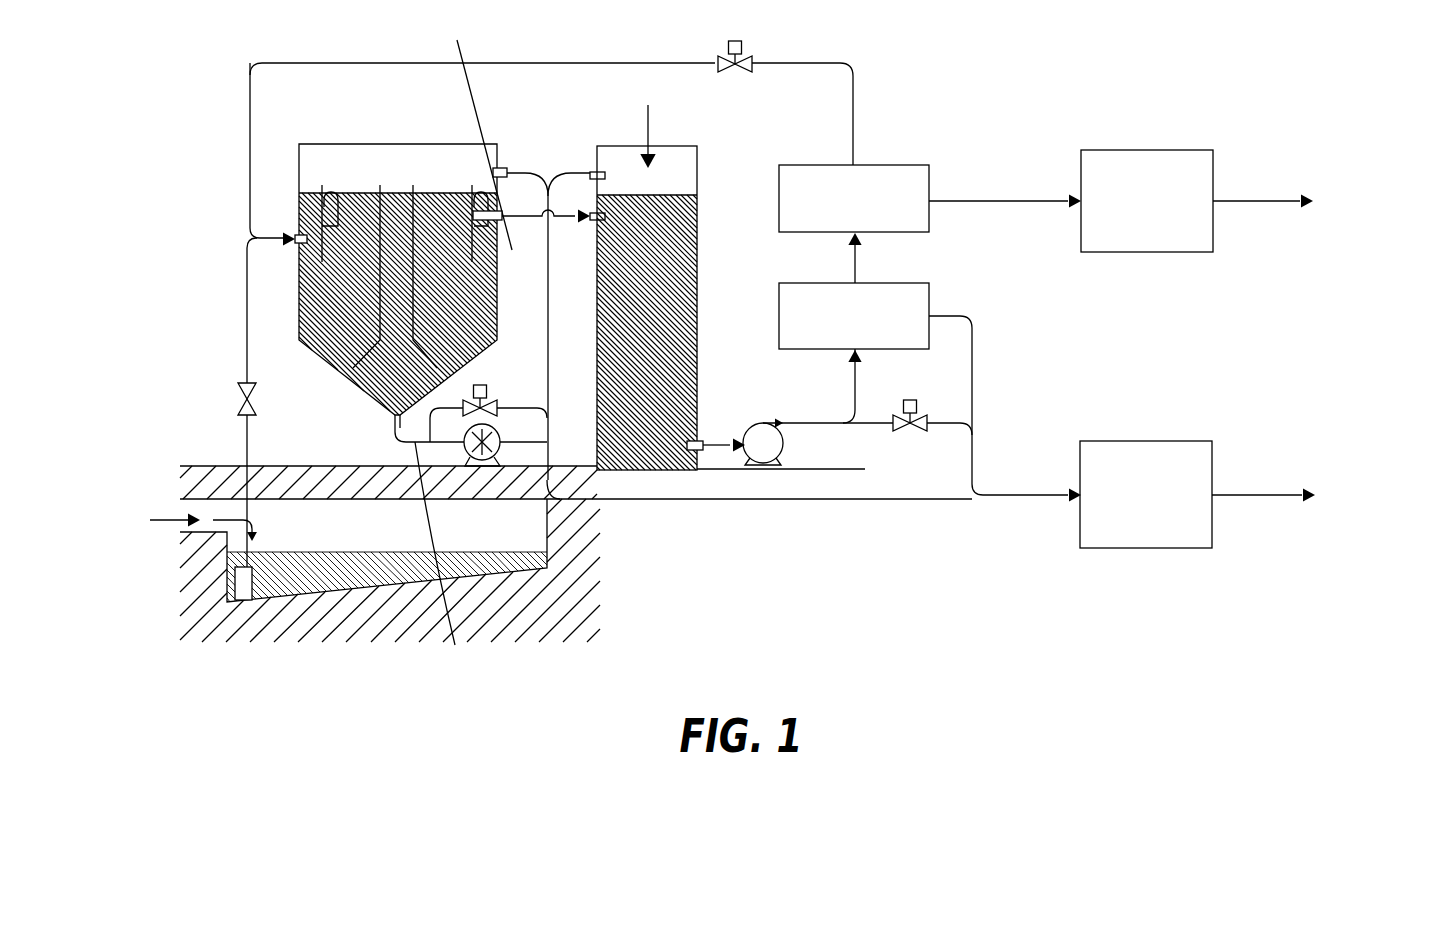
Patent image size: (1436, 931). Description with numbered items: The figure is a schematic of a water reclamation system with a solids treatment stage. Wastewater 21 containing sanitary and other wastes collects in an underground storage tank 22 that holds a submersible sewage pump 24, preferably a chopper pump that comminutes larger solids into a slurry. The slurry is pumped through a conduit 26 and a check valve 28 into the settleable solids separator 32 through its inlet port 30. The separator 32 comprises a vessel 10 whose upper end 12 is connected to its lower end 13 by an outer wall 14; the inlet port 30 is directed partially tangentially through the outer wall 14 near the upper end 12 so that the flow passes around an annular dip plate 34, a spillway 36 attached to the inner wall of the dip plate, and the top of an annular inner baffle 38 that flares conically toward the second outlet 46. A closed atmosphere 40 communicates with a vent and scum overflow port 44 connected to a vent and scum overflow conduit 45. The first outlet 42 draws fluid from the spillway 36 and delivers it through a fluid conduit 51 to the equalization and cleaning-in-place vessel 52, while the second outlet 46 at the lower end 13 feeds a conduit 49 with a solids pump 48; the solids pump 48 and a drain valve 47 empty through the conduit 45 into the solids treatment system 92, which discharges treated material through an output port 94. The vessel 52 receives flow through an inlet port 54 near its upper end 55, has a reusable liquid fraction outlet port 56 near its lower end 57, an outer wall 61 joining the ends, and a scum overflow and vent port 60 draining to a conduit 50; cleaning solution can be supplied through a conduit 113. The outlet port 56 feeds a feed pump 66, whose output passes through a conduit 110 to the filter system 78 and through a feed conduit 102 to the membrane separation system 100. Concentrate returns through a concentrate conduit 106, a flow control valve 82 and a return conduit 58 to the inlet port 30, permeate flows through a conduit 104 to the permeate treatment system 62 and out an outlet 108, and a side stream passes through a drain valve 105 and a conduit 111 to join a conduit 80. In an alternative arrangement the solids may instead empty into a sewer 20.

The vessel 10 is at (325, 249).
The upper end 12 is at (300, 167).
The lower end 13 is at (365, 415).
The outer wall 14 is at (303, 328).
The sewer 20 is at (193, 512).
The wastewater 21 is at (337, 572).
The underground storage tank 22 is at (527, 575).
The submersible sewage pump 24 is at (247, 603).
The conduit 26 is at (243, 446).
The check valve 28 is at (243, 387).
The inlet port 30 is at (293, 238).
The settleable solids separator 32 is at (362, 396).
The annular dip plate 34 is at (318, 230).
The spillway 36 is at (336, 205).
The annular inner baffle 38 is at (415, 324).
The closed atmosphere 40 is at (335, 160).
The first outlet 42 is at (502, 228).
The vent and scum overflow port 44 is at (493, 170).
The vent and scum overflow conduit 45 is at (527, 195).
The second outlet 46 is at (398, 437).
The drain valve 47 is at (487, 393).
The solids pump 48 is at (490, 435).
The conduit 49 is at (447, 557).
The conduit 50 is at (560, 178).
The fluid conduit 51 is at (474, 129).
The equalization and cleaning-in-place vessel 52 is at (683, 282).
The inlet port 54 is at (595, 221).
The upper end 55 is at (700, 162).
The reusable liquid fraction outlet port 56 is at (700, 440).
The lower end 57 is at (700, 458).
The return conduit 58 is at (588, 63).
The scum overflow and vent port 60 is at (592, 172).
The outer wall 61 is at (700, 292).
The permeate treatment system 62 is at (1166, 150).
The feed pump 66 is at (770, 428).
The filter system 78 is at (854, 316).
The conduit 80 is at (972, 325).
The flow control valve 82 is at (750, 56).
The solids treatment system 92 is at (1166, 441).
The output port 94 is at (1255, 493).
The membrane separation system 100 is at (854, 198).
The feed conduit 102 is at (858, 265).
The conduit 104 is at (1040, 187).
The drain valve 105 is at (905, 432).
The concentrate conduit 106 is at (833, 63).
The outlet 108 is at (1240, 200).
The conduit 110 is at (858, 398).
The conduit 111 is at (975, 400).
The conduit 113 is at (645, 143).